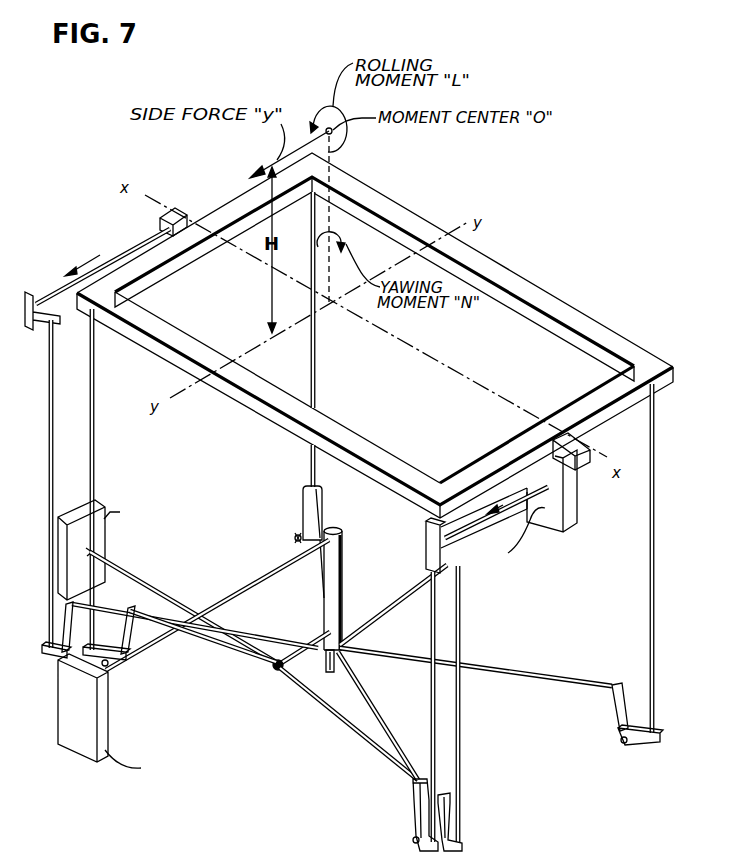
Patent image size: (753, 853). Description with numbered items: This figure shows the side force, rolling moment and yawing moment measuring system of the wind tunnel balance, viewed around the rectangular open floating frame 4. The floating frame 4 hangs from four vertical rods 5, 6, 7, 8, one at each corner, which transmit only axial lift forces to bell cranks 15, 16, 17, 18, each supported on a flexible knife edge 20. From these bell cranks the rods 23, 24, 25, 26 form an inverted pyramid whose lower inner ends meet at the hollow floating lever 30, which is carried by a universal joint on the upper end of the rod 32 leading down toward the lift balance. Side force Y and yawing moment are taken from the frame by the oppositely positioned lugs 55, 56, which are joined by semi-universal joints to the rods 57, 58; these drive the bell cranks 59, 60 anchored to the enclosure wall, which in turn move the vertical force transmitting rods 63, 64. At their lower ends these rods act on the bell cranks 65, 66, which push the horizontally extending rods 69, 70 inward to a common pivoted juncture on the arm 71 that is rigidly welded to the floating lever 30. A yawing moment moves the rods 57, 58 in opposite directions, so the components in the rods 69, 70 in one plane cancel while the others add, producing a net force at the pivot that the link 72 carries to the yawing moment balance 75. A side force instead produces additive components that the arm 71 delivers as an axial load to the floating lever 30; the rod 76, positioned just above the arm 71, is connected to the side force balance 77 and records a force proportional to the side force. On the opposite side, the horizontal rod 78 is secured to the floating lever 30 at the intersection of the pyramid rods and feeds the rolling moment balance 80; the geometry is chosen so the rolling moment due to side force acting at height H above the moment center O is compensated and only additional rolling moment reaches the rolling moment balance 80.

The floating frame 4 is at (166, 333).
The vertical rod 5 is at (94, 375).
The vertical rod 6 is at (431, 628).
The vertical rod 7 is at (316, 393).
The vertical rod 8 is at (655, 552).
The bell crank 15 is at (109, 633).
The bell crank 16 is at (412, 795).
The bell crank 17 is at (303, 502).
The bell crank 18 is at (632, 668).
The knife edge 20 is at (295, 538).
The rod 23 is at (163, 617).
The rod 24 is at (390, 728).
The rod 25 is at (327, 527).
The rod 26 is at (571, 676).
The floating lever 30 is at (343, 607).
The rod 32 is at (322, 672).
The lug 55 is at (181, 207).
The lug 56 is at (594, 444).
The rod 57 is at (140, 244).
The rod 58 is at (469, 548).
The bell crank 59 is at (25, 316).
The bell crank 60 is at (450, 542).
The vertical force transmitting rod 63 is at (49, 398).
The vertical force transmitting rod 64 is at (461, 618).
The bell crank 65 is at (46, 642).
The bell crank 66 is at (470, 843).
The horizontally extending rod 69 is at (181, 647).
The horizontally extending rod 70 is at (362, 738).
The arm 71 is at (310, 630).
The link 72 is at (152, 586).
The yawing moment balance 75 is at (106, 533).
The rod 76 is at (249, 590).
The side force balance 77 is at (105, 726).
The rod 78 is at (410, 590).
The rolling moment balance 80 is at (580, 505).